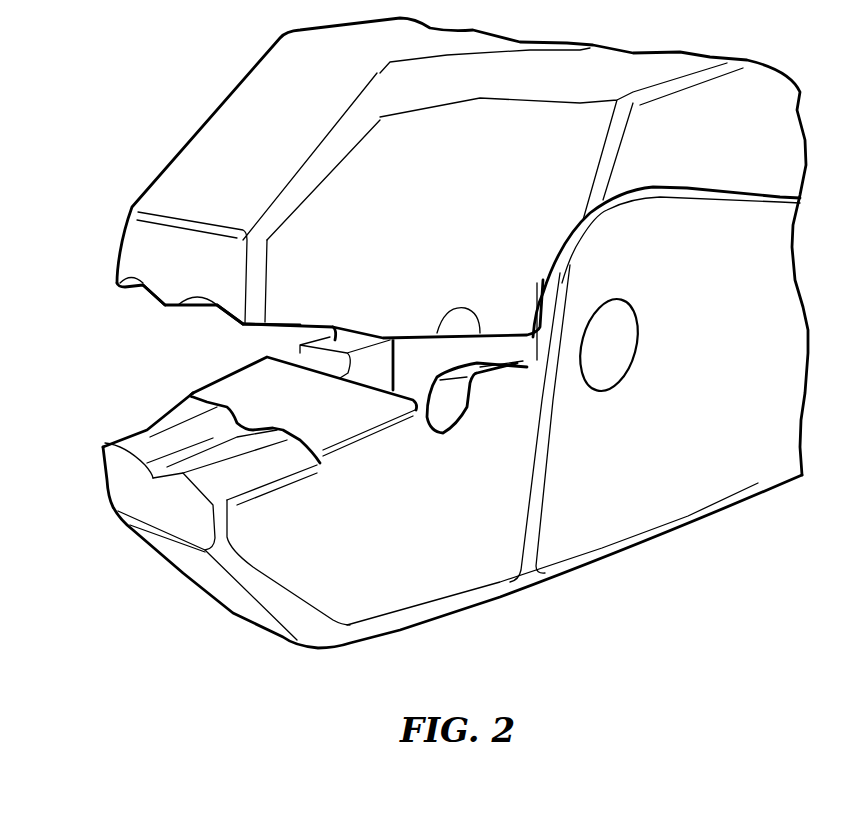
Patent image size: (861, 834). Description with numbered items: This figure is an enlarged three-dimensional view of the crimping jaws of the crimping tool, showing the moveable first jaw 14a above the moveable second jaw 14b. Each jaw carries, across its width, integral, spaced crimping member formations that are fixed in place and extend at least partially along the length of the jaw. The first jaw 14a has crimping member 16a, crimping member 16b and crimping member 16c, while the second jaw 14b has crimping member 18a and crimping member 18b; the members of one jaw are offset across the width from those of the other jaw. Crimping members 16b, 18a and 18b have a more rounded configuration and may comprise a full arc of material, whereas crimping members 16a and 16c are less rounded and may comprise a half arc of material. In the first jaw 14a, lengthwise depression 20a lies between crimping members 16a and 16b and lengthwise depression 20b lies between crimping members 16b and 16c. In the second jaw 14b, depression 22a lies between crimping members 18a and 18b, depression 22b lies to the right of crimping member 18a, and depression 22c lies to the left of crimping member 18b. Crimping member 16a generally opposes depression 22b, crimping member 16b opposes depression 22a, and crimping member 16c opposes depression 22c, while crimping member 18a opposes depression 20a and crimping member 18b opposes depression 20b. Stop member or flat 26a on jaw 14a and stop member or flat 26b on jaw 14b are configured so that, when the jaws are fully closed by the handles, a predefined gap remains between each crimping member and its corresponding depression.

The first jaw 14a is at (93, 225).
The second jaw 14b is at (88, 477).
The crimping member 16a is at (238, 327).
The crimping member 16b is at (163, 307).
The crimping member 16c is at (117, 292).
The crimping member 18a is at (183, 473).
The crimping member 18b is at (147, 430).
The lengthwise depression 20a is at (210, 302).
The lengthwise depression 20b is at (140, 288).
The depression 22a is at (153, 478).
The depression 22b is at (280, 470).
The depression 22c is at (110, 443).
The stop member or flat 26a is at (373, 322).
The stop member or flat 26b is at (340, 407).